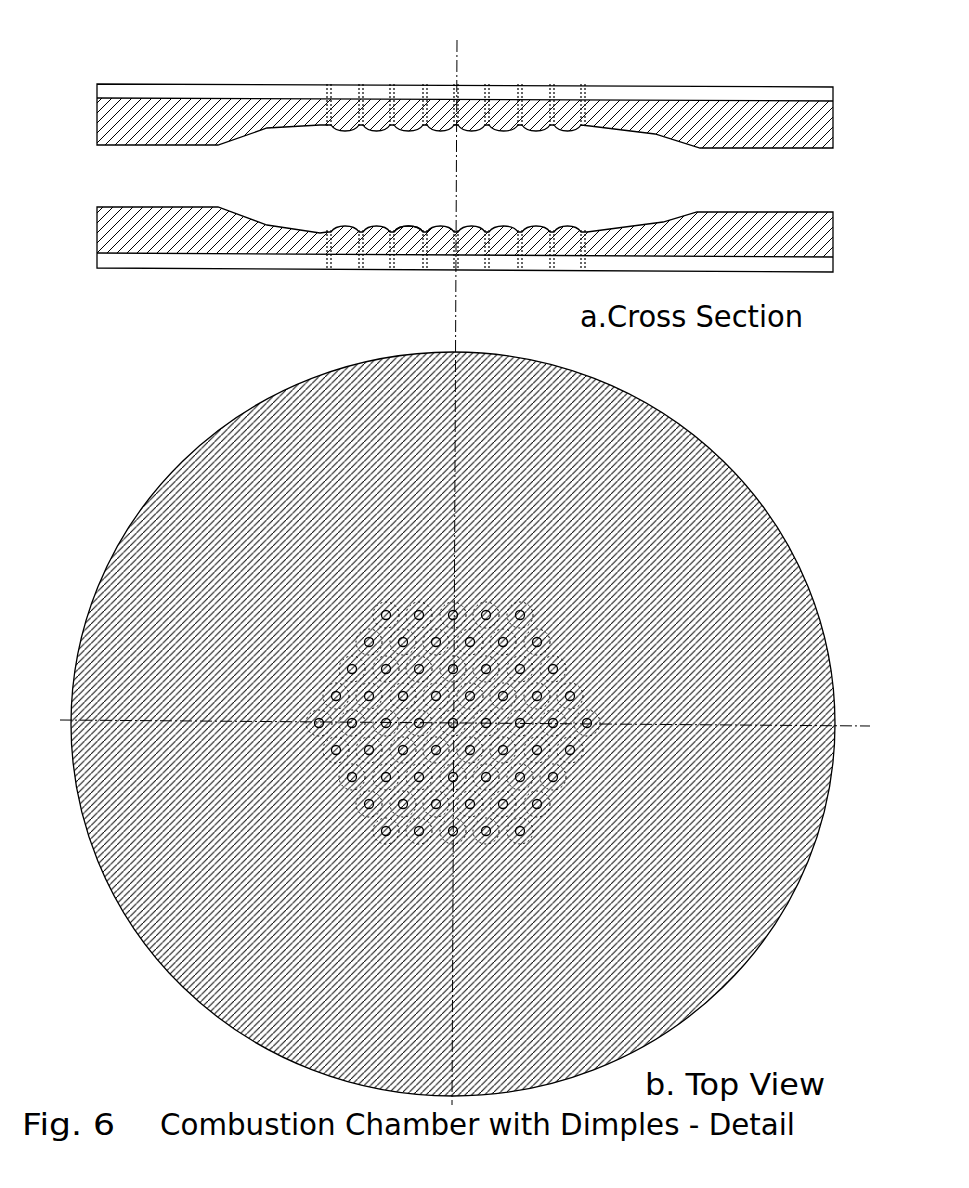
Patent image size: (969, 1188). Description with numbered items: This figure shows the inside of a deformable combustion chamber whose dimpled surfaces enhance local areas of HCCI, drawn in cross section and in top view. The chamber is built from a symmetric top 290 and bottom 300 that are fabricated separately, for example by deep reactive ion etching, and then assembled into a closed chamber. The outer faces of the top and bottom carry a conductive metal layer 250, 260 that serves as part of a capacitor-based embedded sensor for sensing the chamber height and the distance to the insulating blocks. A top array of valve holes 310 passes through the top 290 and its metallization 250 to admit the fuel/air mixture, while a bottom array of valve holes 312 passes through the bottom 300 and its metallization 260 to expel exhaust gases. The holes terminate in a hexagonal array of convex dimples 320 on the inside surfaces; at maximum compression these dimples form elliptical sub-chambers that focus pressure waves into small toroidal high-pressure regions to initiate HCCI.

The top conductive metal layer 250 is at (593, 93).
The top half of the combustion chamber 290 is at (220, 112).
The top valve holes 310 is at (427, 98).
The dimples 320 is at (392, 123).
The bottom valve holes 312 is at (428, 238).
The bottom half of the combustion chamber 300 is at (230, 232).
The bottom conductive metal layer 260 is at (313, 268).